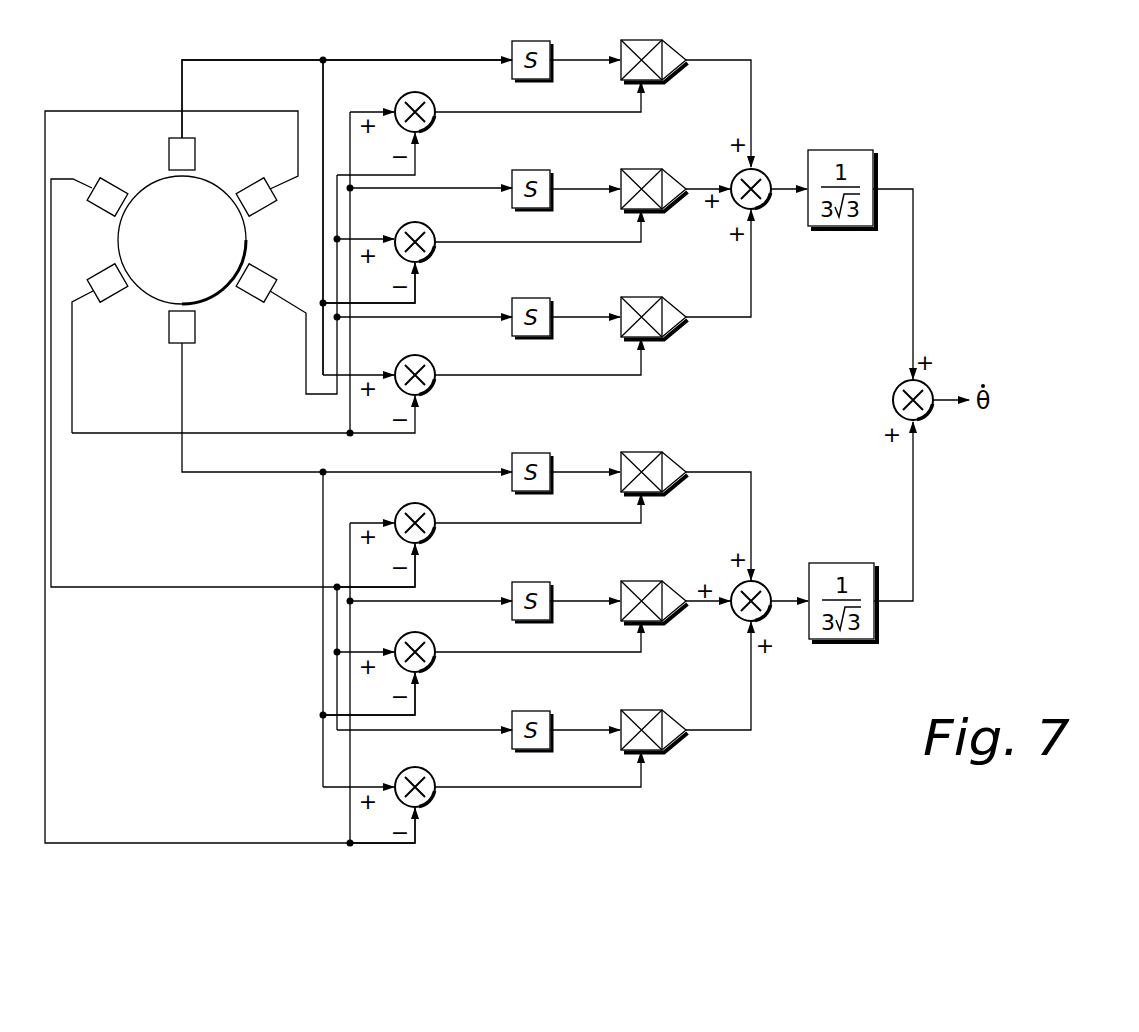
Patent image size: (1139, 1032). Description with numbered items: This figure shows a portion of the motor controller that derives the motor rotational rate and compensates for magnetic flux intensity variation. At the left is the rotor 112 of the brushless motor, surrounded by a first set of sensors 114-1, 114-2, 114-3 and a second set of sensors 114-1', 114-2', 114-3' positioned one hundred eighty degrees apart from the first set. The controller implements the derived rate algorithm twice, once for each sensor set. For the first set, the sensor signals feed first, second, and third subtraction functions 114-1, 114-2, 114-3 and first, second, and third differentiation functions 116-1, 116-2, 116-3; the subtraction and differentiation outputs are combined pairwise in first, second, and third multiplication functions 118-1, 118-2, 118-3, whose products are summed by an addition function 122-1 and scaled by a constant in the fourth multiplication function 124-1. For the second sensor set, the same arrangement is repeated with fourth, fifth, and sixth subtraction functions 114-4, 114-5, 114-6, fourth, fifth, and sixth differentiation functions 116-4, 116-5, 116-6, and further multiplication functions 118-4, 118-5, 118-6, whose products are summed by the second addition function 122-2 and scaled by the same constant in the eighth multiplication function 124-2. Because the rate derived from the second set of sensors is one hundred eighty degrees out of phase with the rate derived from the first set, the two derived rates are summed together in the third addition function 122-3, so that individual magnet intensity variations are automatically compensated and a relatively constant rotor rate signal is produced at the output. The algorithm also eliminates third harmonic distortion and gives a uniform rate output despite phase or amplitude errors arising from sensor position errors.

The rotor 112 is at (213, 182).
The first subtraction function 114-1 is at (245, 309).
The second subtraction function 114-2 is at (334, 209).
The third subtraction function 114-3 is at (302, 188).
The opposed sensor 114-1' is at (275, 211).
The opposed sensor 114-2' is at (91, 176).
The opposed sensor 114-3' is at (140, 340).
The fourth subtraction function 114-4 is at (400, 773).
The fifth subtraction function 114-5 is at (402, 506).
The sixth subtraction function 114-6 is at (400, 638).
The first differentiation function 116-1 is at (516, 170).
The second differentiation function 116-2 is at (516, 298).
The third differentiation function 116-3 is at (516, 41).
The fourth differentiation function 116-4 is at (516, 582).
The fifth differentiation function 116-5 is at (516, 711).
The sixth differentiation function 116-6 is at (516, 453).
The first multiplication function 118-1 is at (650, 292).
The second multiplication function 118-2 is at (650, 30).
The third multiplication function 118-3 is at (650, 162).
The multiplier 118-4 is at (650, 704).
The fifth multiplication function 118-5 is at (650, 442).
The sixth multiplication function 118-6 is at (650, 568).
The summing junction 122-1 is at (737, 206).
The second addition function 122-2 is at (737, 620).
The third addition function 122-3 is at (897, 388).
The fourth multiplication function 124-1 is at (841, 150).
The eighth multiplication function 124-2 is at (841, 563).